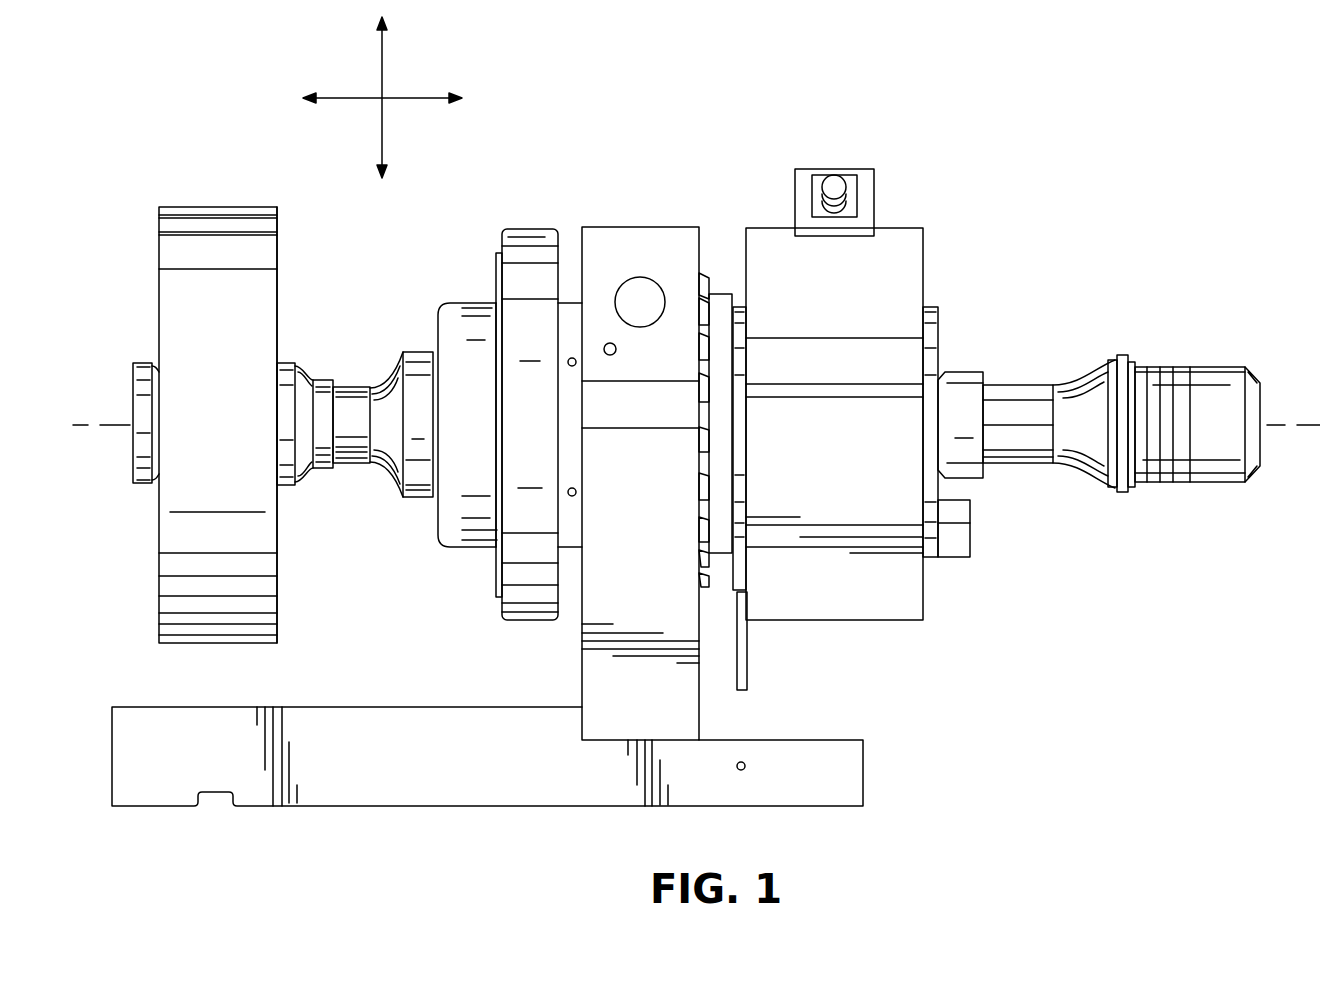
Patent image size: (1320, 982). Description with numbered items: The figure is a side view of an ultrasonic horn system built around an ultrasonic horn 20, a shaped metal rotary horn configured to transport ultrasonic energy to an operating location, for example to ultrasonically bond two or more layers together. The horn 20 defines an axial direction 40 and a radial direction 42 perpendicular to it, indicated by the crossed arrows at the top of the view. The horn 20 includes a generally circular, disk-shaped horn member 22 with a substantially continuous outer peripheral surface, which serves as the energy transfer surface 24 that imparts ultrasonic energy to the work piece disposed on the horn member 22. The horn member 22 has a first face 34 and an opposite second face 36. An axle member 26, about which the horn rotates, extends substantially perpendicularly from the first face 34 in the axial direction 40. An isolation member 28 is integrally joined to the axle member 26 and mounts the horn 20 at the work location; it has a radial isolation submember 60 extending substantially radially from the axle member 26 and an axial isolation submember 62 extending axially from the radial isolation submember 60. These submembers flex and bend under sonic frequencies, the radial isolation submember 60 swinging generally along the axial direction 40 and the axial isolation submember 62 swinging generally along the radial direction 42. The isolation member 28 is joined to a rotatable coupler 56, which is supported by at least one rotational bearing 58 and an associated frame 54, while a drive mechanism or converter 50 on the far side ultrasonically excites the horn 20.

The ultrasonic horn 20 is at (222, 439).
The horn member 22 is at (166, 305).
The energy transfer surface 24 is at (168, 208).
The axle member 26 is at (345, 464).
The isolation member 28 is at (437, 426).
The first face 34 is at (278, 290).
The second face 36 is at (159, 533).
The axial direction 40 is at (426, 100).
The radial direction 42 is at (383, 42).
The converter 50 is at (1213, 380).
The frame 54 is at (378, 712).
The rotatable coupler 56 is at (516, 229).
The rotational bearing 58 is at (618, 227).
The radial isolation submember 60 is at (440, 318).
The axial isolation submember 62 is at (476, 300).